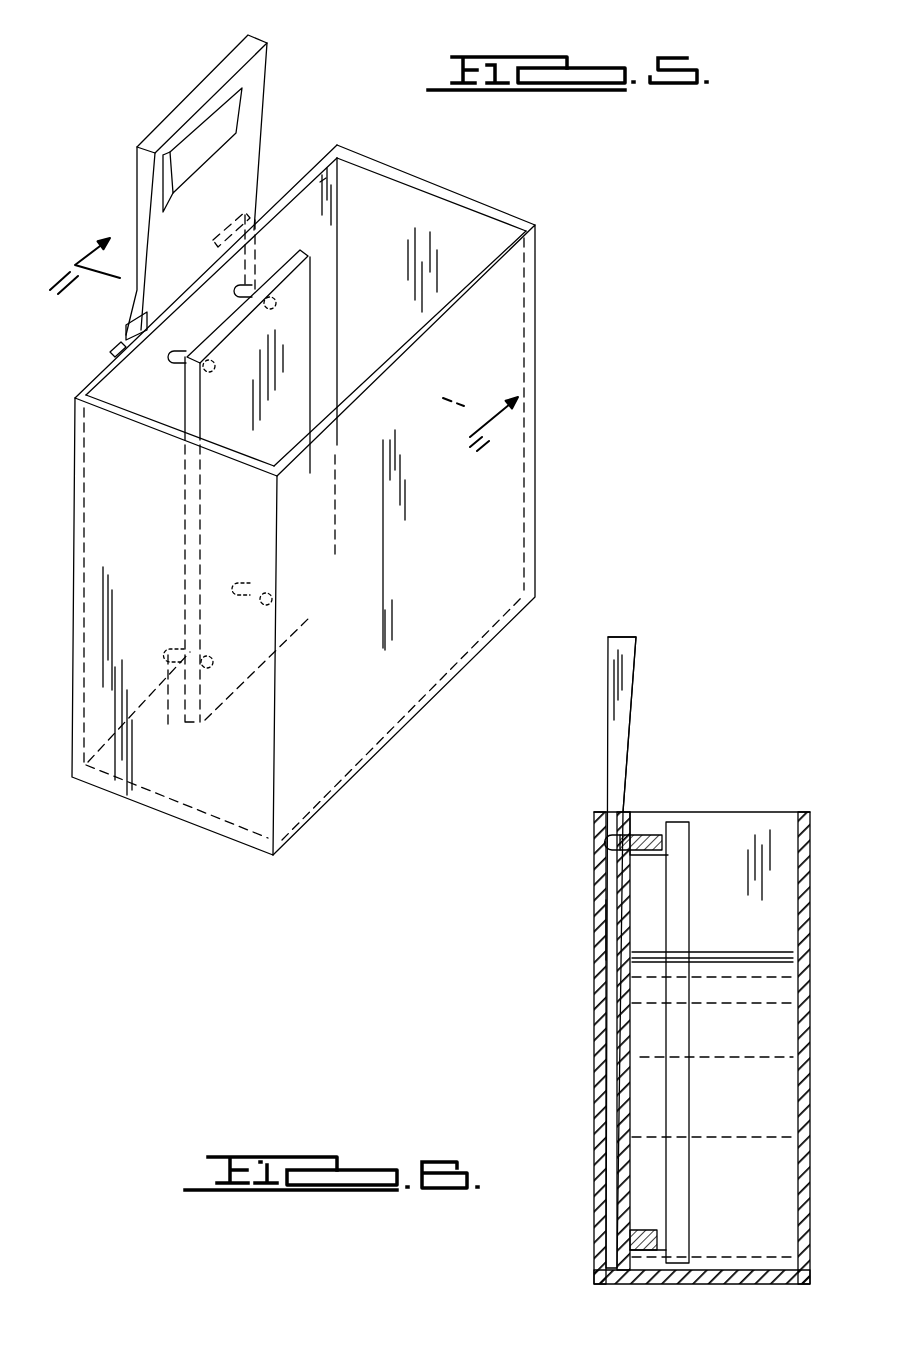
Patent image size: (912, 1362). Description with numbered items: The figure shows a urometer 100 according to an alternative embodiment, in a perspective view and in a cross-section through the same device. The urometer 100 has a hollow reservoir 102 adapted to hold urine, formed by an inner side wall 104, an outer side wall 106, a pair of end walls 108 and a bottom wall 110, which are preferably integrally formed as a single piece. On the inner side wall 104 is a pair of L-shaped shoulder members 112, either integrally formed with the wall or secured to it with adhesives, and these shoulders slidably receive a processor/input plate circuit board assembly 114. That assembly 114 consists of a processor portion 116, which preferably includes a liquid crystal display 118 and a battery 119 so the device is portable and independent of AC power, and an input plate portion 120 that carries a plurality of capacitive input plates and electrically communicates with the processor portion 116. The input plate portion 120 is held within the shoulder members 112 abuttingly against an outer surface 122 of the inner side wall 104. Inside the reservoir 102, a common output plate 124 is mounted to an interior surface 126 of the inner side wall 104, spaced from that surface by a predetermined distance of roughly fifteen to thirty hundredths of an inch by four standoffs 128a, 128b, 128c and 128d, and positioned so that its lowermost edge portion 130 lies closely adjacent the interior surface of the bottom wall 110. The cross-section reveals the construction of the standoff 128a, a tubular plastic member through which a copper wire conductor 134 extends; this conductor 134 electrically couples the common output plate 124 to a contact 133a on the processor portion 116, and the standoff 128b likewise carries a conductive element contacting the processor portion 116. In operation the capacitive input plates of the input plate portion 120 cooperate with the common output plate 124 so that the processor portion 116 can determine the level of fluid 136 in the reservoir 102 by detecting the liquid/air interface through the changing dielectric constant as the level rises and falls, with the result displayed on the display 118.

In FIG. 5, the urometer 100 is at (329, 427).
In FIG. 6, the urometer 100 is at (680, 980).
In FIG. 5, the hollow reservoir 102 is at (548, 360).
In FIG. 6, the hollow reservoir 102 is at (814, 896).
In FIG. 5, the inner side wall 104 is at (118, 383).
In FIG. 6, the inner side wall 104 is at (605, 1095).
In FIG. 5, the outer side wall 106 is at (500, 498).
In FIG. 6, the outer side wall 106 is at (812, 822).
In FIG. 5, the end walls 108 is at (500, 293).
In FIG. 5, the bottom wall 110 is at (403, 668).
In FIG. 6, the bottom wall 110 is at (752, 1280).
In FIG. 5, the L-shaped shoulder members 112 is at (255, 227).
In FIG. 6, the L-shaped shoulder members 112 is at (600, 932).
In FIG. 5, the processor/input plate circuit board assembly 114 is at (198, 167).
In FIG. 6, the processor/input plate circuit board assembly 114 is at (607, 790).
In FIG. 5, the processor portion 116 is at (253, 72).
In FIG. 6, the processor portion 116 is at (628, 650).
In FIG. 5, the liquid crystal display 118 is at (233, 115).
In FIG. 5, the battery 119 is at (165, 172).
In FIG. 5, the input plate portion 120 is at (254, 167).
In FIG. 6, the input plate portion 120 is at (623, 785).
In FIG. 5, the outer surface 122 is at (120, 352).
In FIG. 5, the common output plate 124 is at (303, 378).
In FIG. 6, the common output plate 124 is at (680, 870).
In FIG. 5, the interior surface 126 is at (323, 187).
In FIG. 5, the standoff 128a is at (178, 364).
In FIG. 6, the standoff 128a is at (645, 850).
In FIG. 5, the standoff 128b is at (262, 288).
In FIG. 5, the standoff 128c is at (182, 706).
In FIG. 6, the standoff 128c is at (648, 1256).
In FIG. 5, the standoff 128d is at (270, 588).
In FIG. 5, the lowermost edge portion 130 is at (232, 690).
In FIG. 6, the contact 133a is at (612, 840).
In FIG. 6, the copper wire conductor 134 is at (645, 835).
In FIG. 6, the fluid 136 is at (785, 993).